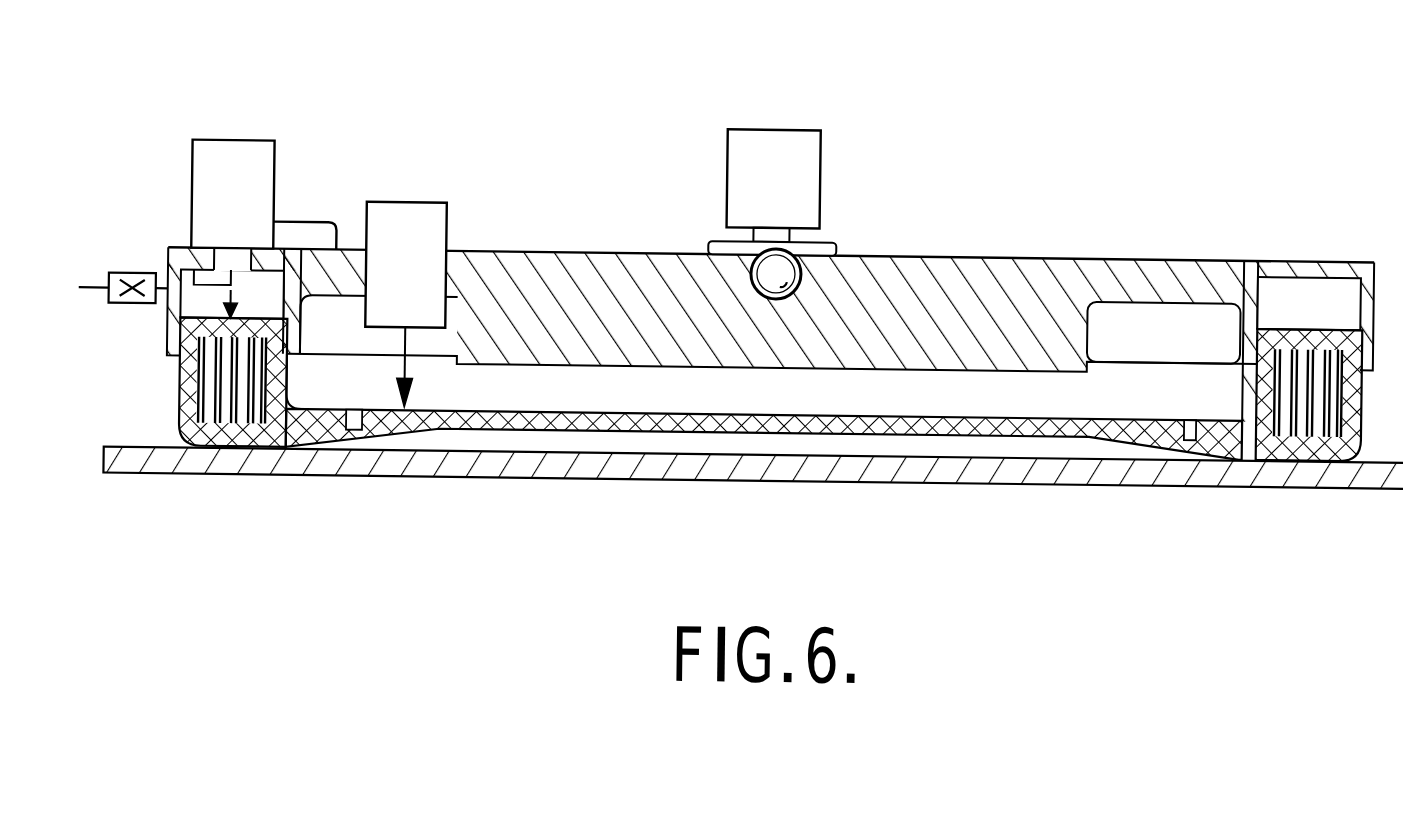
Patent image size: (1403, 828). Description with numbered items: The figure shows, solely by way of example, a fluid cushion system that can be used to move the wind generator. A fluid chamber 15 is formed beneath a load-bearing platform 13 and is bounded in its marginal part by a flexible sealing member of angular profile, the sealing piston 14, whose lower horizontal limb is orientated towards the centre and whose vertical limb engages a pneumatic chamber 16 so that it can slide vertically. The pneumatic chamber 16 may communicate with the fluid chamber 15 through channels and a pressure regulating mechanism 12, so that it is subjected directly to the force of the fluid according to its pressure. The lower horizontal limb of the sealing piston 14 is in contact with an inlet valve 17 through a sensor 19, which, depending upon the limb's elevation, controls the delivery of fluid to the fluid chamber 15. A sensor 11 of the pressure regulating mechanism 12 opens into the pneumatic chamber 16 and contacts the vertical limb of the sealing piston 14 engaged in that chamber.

The sensor 11 is at (190, 268).
The pressure regulating mechanism 12 is at (230, 169).
The load-bearing platform 13 is at (555, 307).
The sealing piston 14 is at (277, 448).
The fluid chamber 15 is at (938, 387).
The pneumatic chamber 16 is at (193, 308).
The inlet valve 17 is at (398, 231).
The sensor 19 is at (427, 363).